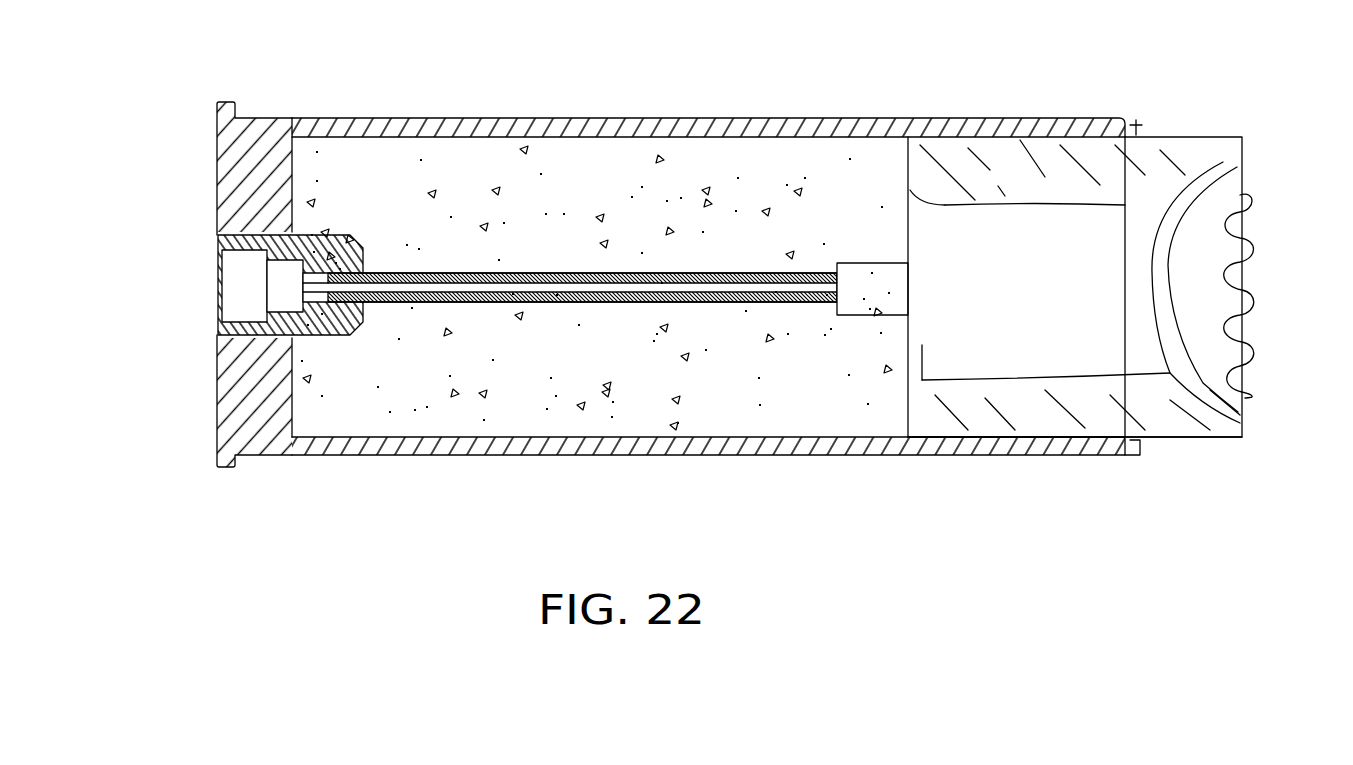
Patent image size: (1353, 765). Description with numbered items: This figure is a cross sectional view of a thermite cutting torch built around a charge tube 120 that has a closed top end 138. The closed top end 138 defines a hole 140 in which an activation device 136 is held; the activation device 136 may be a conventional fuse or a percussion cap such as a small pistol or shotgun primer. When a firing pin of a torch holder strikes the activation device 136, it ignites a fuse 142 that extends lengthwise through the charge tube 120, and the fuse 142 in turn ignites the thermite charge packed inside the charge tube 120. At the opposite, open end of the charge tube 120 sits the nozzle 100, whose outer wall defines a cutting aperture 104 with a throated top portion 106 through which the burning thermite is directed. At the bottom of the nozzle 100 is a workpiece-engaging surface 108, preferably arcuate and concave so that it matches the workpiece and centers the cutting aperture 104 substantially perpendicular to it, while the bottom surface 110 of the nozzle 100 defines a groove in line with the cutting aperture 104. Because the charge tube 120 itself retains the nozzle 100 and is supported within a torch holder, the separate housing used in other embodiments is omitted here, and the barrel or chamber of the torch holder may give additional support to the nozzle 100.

The nozzle 100 is at (1037, 178).
The cutting aperture 104 is at (987, 240).
The throated top portion 106 is at (912, 395).
The workpiece-engaging surface 108 is at (1203, 383).
The bottom surface 110 is at (1246, 180).
The charge tube 120 is at (540, 130).
The activation device 136 is at (245, 285).
The closed top end 138 is at (255, 172).
The hole 140 is at (233, 313).
The fuse 142 is at (760, 288).